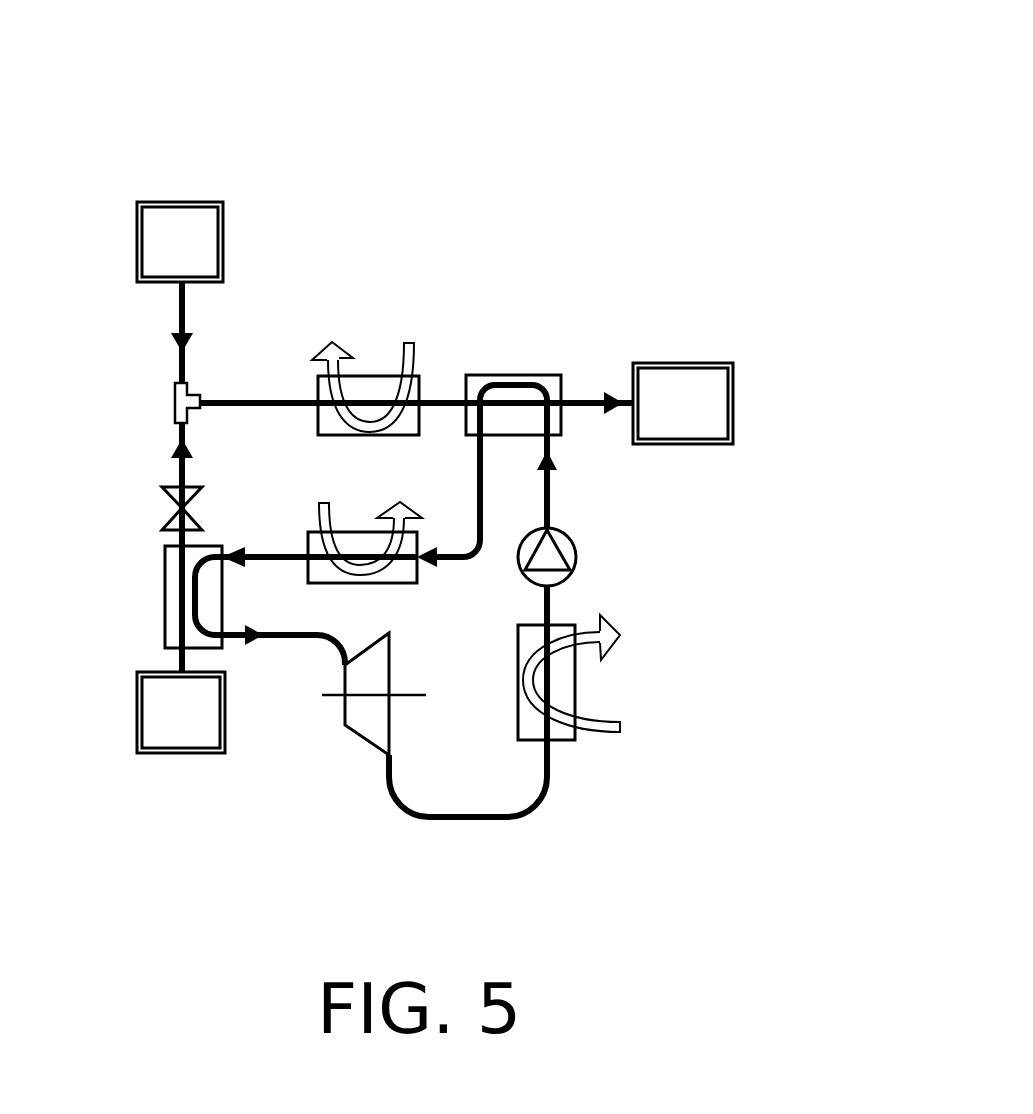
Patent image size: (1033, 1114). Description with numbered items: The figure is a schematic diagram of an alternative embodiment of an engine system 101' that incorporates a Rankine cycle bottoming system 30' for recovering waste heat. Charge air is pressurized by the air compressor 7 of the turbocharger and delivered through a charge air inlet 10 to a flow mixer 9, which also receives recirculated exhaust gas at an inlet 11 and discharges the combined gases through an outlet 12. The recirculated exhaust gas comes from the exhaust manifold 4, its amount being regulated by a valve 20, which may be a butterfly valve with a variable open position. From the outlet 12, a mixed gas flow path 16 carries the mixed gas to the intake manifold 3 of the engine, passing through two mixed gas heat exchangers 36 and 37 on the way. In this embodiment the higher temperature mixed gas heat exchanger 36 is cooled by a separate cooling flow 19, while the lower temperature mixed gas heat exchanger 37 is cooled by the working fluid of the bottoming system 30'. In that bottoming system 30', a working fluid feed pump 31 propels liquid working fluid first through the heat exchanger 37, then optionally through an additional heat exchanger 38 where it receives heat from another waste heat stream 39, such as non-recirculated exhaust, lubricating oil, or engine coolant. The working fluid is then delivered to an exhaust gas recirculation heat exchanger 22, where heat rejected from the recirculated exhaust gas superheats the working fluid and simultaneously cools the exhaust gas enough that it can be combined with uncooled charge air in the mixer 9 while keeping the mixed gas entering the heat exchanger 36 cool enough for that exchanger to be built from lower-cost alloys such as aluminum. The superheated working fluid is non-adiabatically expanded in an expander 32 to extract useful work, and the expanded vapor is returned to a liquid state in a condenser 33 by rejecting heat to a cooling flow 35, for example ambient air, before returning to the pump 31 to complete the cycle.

The intake manifold 3 is at (683, 403).
The exhaust manifold 4 is at (181, 712).
The air compressor 7 is at (180, 242).
The flow mixer 9 is at (175, 405).
The first inlet of junction 10 is at (176, 388).
The inlet 11 is at (175, 426).
The outlet 12 is at (200, 403).
The mixed gas flow path 16 is at (270, 403).
The cooling flow 19 is at (412, 345).
The valve 20 is at (165, 510).
The exhaust gas recirculation heat exchanger 22 is at (165, 612).
The Rankine cycle bottoming system 30' is at (606, 749).
The working fluid feed pump 31 is at (576, 555).
The expander 32 is at (362, 732).
The condenser 33 is at (525, 742).
The cooling flow 35 is at (612, 737).
The mixed gas heat exchanger 36 is at (318, 425).
The mixed gas heat exchanger 37 is at (546, 375).
The additional heat exchanger 38 is at (357, 530).
The waste heat flow 39 is at (404, 518).
The engine system 101' is at (535, 216).